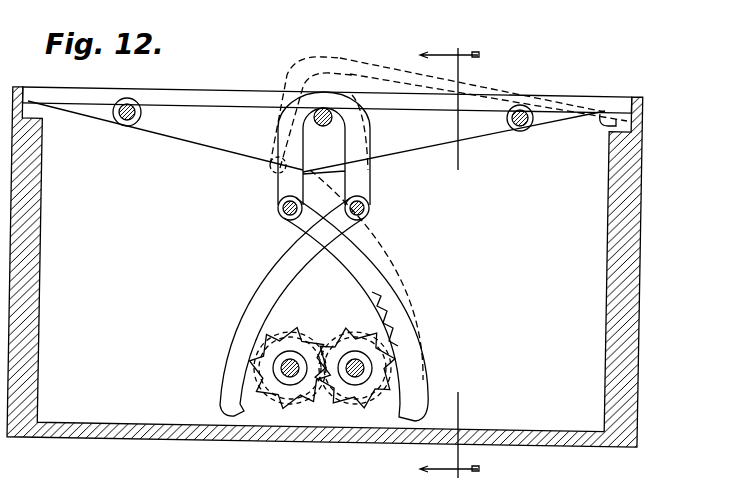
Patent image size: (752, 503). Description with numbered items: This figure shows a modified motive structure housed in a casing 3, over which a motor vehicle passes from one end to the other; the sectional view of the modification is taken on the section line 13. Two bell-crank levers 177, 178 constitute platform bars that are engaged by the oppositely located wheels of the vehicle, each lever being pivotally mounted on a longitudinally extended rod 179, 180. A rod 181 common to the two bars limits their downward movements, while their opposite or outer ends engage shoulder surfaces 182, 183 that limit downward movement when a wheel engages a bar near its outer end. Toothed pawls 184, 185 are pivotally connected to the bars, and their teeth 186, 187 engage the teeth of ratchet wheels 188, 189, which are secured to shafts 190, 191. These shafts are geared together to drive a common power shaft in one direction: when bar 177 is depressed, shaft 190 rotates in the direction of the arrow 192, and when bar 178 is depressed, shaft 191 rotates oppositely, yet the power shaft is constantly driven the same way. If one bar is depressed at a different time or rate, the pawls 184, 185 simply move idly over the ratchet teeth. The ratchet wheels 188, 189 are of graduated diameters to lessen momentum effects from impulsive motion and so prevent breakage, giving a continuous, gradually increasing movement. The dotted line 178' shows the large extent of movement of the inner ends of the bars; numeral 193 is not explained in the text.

The casing 3 is at (624, 240).
The section line 13— 13 is at (449, 267).
The bell-crank lever 177 is at (206, 92).
The bell-crank lever 178 is at (483, 89).
The dotted line position of bar 178' is at (346, 206).
The longitudinally extended rod 179 is at (127, 120).
The longitudinally extended rod 180 is at (520, 130).
The common rod 181 is at (321, 126).
The shoulder surface 182 is at (36, 120).
The shoulder surface 183 is at (612, 128).
The toothed pawl 184 is at (277, 279).
The toothed pawl 185 is at (356, 268).
The teeth of pawl 186 is at (252, 352).
The teeth of pawl 187 is at (406, 396).
The ratchet wheel 188 is at (294, 392).
The ratchet wheel 189 is at (362, 390).
The shaft 190 is at (285, 382).
The shaft 191 is at (352, 352).
The arrow 192 is at (258, 360).
The right toothed wheel 193 is at (393, 356).